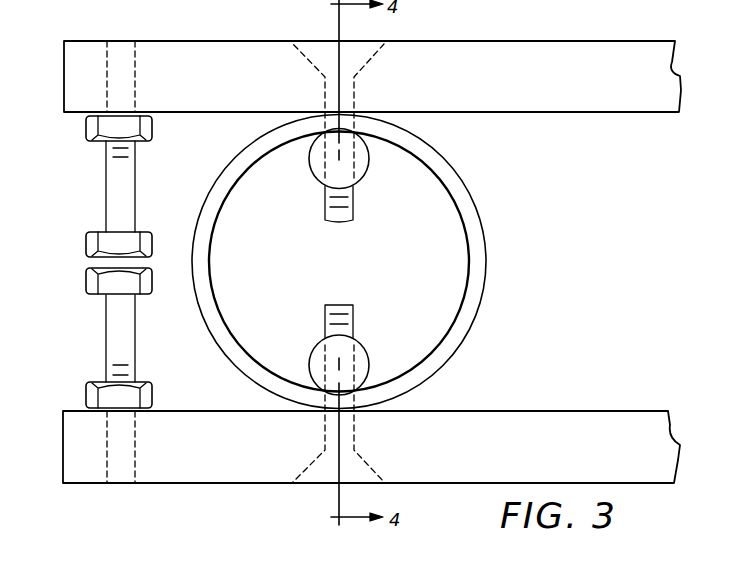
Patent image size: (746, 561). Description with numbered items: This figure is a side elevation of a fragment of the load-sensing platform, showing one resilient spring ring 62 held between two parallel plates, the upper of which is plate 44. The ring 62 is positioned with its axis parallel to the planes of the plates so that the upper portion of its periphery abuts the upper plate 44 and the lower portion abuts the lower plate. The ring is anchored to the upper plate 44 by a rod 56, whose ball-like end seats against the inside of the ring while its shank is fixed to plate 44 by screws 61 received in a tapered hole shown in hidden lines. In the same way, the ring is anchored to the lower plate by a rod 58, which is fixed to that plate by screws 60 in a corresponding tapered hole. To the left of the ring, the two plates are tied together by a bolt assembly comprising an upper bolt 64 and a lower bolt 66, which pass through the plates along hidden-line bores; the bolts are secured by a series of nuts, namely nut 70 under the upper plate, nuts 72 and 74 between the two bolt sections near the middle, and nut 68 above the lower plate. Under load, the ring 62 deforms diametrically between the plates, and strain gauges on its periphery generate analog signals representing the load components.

The plate 44 is at (476, 86).
The rod 56 is at (316, 174).
The rod 58 is at (362, 353).
The screws 60 is at (318, 478).
The screws 61 is at (316, 50).
The ring 62 is at (480, 307).
The upper bolt 64 is at (107, 190).
The lower bolt 66 is at (107, 326).
The nut 68 is at (90, 394).
The nut 70 is at (88, 138).
The nut 72 is at (88, 243).
The nut 74 is at (88, 283).